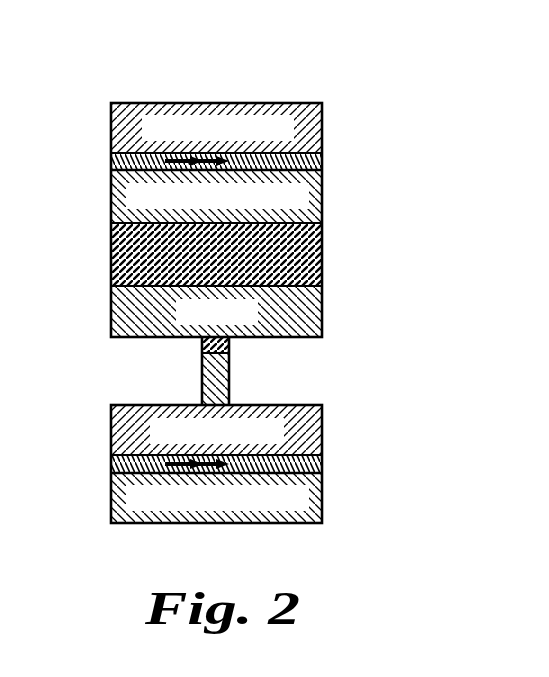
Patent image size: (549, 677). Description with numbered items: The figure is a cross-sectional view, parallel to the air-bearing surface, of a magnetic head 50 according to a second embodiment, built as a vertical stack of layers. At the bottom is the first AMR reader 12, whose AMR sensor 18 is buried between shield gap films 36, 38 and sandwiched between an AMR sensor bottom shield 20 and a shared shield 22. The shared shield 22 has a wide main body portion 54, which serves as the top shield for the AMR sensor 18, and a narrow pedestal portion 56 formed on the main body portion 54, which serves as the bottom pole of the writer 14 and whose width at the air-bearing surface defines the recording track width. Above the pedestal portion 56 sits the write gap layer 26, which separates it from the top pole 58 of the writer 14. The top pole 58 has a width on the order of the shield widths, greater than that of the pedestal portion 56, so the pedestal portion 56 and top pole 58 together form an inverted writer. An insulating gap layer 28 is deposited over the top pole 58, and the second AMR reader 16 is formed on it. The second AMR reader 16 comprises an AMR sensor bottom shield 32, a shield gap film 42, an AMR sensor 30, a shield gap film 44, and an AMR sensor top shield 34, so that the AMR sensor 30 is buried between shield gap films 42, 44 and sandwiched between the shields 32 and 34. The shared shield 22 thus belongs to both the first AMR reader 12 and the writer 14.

The magnetic head 50 is at (280, 73).
The AMR sensor top shield 34 is at (323, 122).
The shield gap film 42 is at (255, 168).
The shield gap film 44 is at (323, 162).
The AMR sensor 30 is at (162, 165).
The AMR sensor bottom shield 32 is at (323, 193).
The insulating gap layer 28 is at (323, 254).
The top pole 58 is at (323, 312).
The write gap layer 26 is at (238, 346).
The pedestal portion 56 is at (230, 390).
The main body portion 54 is at (318, 404).
The shield gap film 36 is at (255, 468).
The shield gap film 38 is at (323, 462).
The AMR sensor 18 is at (144, 468).
The AMR sensor bottom shield 20 is at (323, 500).
The second AMR reader 16 is at (45, 102).
The writer 14 is at (65, 290).
The first AMR reader 12 is at (85, 405).
The shared shield 22 is at (371, 347).